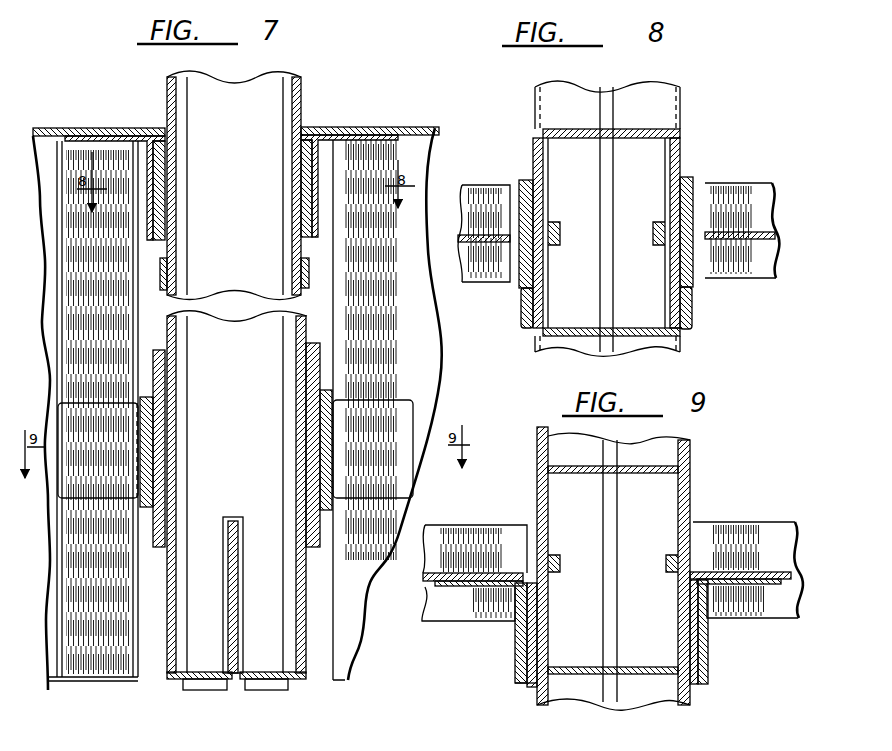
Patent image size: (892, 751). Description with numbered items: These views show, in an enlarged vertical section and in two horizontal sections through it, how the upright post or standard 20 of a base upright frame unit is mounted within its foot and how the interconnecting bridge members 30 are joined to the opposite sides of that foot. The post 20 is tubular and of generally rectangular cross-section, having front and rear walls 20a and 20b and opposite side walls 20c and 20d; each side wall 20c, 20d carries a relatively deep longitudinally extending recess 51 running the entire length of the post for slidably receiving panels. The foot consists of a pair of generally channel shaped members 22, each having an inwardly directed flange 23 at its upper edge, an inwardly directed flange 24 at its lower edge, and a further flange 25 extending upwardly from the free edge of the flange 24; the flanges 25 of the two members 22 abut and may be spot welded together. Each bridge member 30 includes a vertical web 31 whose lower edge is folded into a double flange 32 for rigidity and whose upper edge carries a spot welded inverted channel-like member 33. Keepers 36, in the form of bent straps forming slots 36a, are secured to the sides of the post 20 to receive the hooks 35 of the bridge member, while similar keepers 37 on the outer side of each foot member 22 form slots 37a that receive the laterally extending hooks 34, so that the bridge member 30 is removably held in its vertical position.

In FIG. 7, the vertical post or standard 20 is at (300, 96).
In FIG. 8, the vertical post or standard 20 is at (648, 138).
In FIG. 9, the vertical post or standard 20 is at (578, 675).
In FIG. 8, the front wall 20a is at (648, 316).
In FIG. 8, the rear wall 20b is at (578, 138).
In FIG. 8, the side wall 20c is at (548, 188).
In FIG. 8, the side wall 20d is at (665, 186).
In FIG. 7, the channel shaped member 22 is at (163, 262).
In FIG. 9, the channel shaped member 22 is at (537, 468).
In FIG. 8, the inwardly directed flange 23 is at (574, 116).
In FIG. 7, the inwardly directed flange 24 is at (211, 662).
In FIG. 8, the inwardly directed flange 24 is at (583, 272).
In FIG. 9, the inwardly directed flange 24 is at (586, 612).
In FIG. 7, the flange 25 is at (229, 597).
In FIG. 8, the flange 25 is at (620, 201).
In FIG. 9, the flange 25 is at (603, 571).
In FIG. 7, the interconnecting bridge member 30 is at (80, 681).
In FIG. 7, the vertical web 31 is at (128, 533).
In FIG. 8, the vertical web 31 is at (470, 243).
In FIG. 9, the vertical web 31 is at (484, 575).
In FIG. 7, the double flange 32 is at (118, 681).
In FIG. 8, the double flange 32 is at (495, 190).
In FIG. 9, the double flange 32 is at (503, 522).
In FIG. 7, the inverted channel-like member 33 is at (127, 128).
In FIG. 7, the laterally extending hook 34 is at (157, 454).
In FIG. 9, the laterally extending hook 34 is at (517, 631).
In FIG. 7, the hook 35 is at (157, 151).
In FIG. 7, the keeper 36 is at (150, 171).
In FIG. 8, the keeper 36 is at (520, 285).
In FIG. 8, the slot 36a is at (530, 315).
In FIG. 7, the keeper 37 is at (145, 478).
In FIG. 9, the keeper 37 is at (520, 656).
In FIG. 7, the slot 37a is at (160, 431).
In FIG. 8, the longitudinally extending recess 51 is at (556, 228).
In FIG. 9, the longitudinally extending recess 51 is at (556, 558).